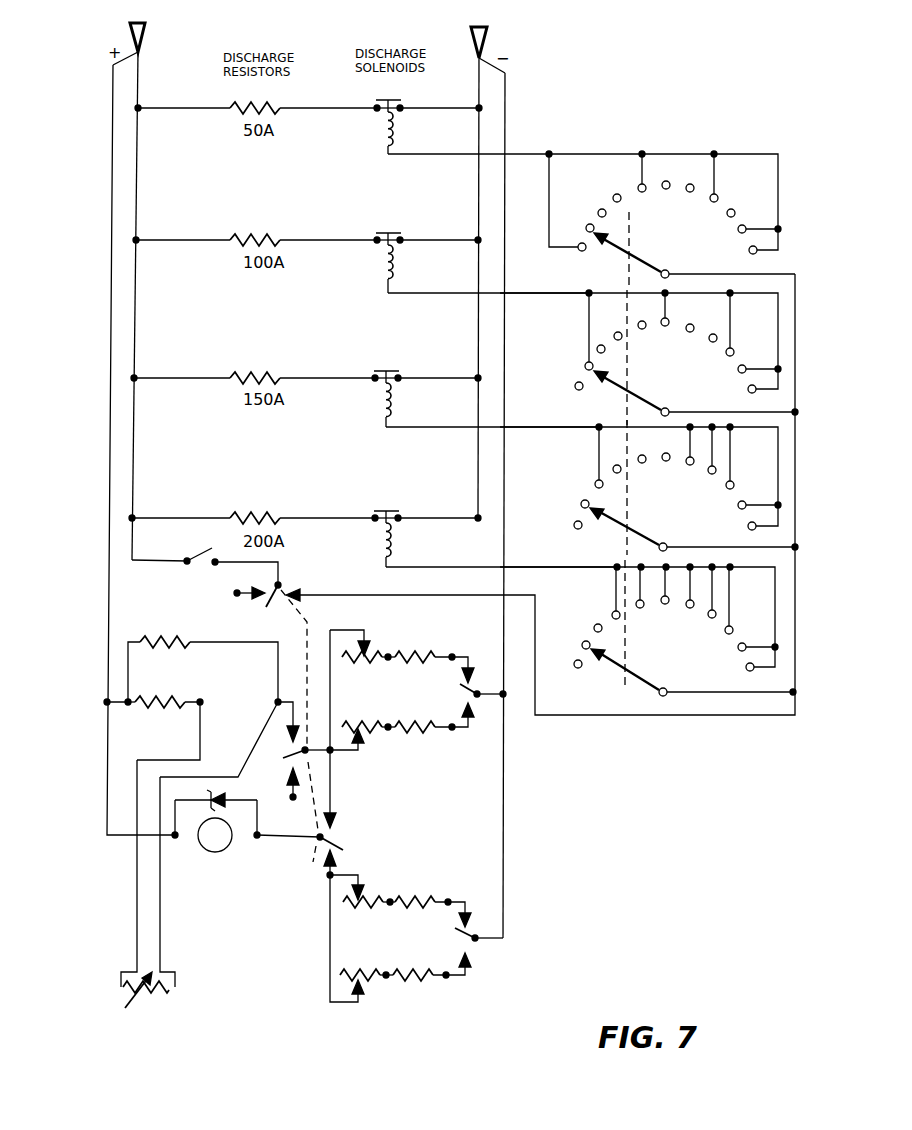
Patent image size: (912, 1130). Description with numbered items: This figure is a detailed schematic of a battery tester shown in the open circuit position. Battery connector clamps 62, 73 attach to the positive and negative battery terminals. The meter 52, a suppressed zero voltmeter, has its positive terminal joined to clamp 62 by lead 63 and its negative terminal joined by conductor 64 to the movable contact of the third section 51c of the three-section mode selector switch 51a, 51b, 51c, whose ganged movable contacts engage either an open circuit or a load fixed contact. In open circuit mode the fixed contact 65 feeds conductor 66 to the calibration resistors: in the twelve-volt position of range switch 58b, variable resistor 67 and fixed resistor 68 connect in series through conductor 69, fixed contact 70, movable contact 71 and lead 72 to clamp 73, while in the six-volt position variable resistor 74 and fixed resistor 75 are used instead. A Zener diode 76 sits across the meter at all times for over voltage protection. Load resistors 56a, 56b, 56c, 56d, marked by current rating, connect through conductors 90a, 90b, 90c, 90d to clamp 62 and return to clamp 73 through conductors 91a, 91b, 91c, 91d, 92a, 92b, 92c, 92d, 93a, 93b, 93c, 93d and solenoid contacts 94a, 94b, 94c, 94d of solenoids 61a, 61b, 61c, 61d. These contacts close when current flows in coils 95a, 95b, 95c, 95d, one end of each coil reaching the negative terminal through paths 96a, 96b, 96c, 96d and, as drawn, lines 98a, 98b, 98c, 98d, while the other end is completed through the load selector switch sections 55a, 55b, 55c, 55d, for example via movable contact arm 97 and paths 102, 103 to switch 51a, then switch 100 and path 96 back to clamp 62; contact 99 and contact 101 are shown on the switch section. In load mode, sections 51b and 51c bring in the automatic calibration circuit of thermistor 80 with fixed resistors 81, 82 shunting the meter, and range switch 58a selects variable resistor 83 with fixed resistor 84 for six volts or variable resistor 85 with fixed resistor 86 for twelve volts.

The battery connector clamp 62 is at (147, 33).
The battery connector clamp 73 is at (488, 40).
The lead 63 is at (108, 548).
The lead 72 is at (504, 866).
The conductor 90a is at (143, 106).
The conductor 90b is at (143, 238).
The conductor 90c is at (143, 376).
The conductor 90d is at (143, 516).
The conductor 91a is at (337, 106).
The conductor 91b is at (337, 238).
The conductor 91c is at (327, 376).
The conductor 91d is at (352, 517).
The conductor 92a is at (457, 110).
The conductor 92b is at (464, 240).
The conductor 92c is at (462, 378).
The conductor 92d is at (464, 522).
The conductor 93a is at (478, 75).
The conductor 93b is at (478, 182).
The conductor 93c is at (478, 268).
The conductor 93d is at (478, 402).
The solenoid contacts 94a is at (388, 99).
The solenoid contacts 94b is at (388, 232).
The solenoid contacts 94c is at (386, 370).
The solenoid contacts 94d is at (386, 510).
The solenoid coil 95a is at (388, 150).
The solenoid coil 95b is at (388, 290).
The solenoid coil 95c is at (386, 425).
The solenoid coil 95d is at (392, 548).
The path 96a is at (397, 116).
The path 96b is at (396, 248).
The path 96c is at (396, 388).
The path 96d is at (398, 528).
The load resistor 56a is at (234, 118).
The load resistor 56b is at (234, 250).
The load resistor 56c is at (236, 388).
The load resistor 56d is at (246, 512).
The solenoid 61a is at (374, 122).
The solenoid 61b is at (374, 262).
The solenoid 61c is at (358, 404).
The solenoid 61d is at (372, 547).
The solenoid to rotary switch conductor 98a is at (518, 152).
The solenoid to rotary switch conductor 98b is at (512, 292).
The solenoid to rotary switch conductor 98c is at (512, 426).
The solenoid to rotary switch conductor 98d is at (512, 566).
The load selector switch 55a is at (690, 156).
The load selector switch 55b is at (798, 370).
The load selector switch 55c is at (798, 519).
The load selector switch 55d is at (796, 639).
The switch contact conductor 99 is at (585, 314).
The movable contact arm 97 is at (630, 392).
The switch contact 101 is at (592, 370).
The path 102 is at (760, 413).
The path 103 is at (798, 415).
The path 96 is at (134, 567).
The switch 100 is at (196, 570).
The mode selector switch section 51a is at (302, 590).
The mode selector switch section 51b is at (332, 788).
The mode selector switch section 51c is at (332, 840).
The fixed resistor 82 is at (165, 635).
The fixed resistor 81 is at (140, 698).
The Zener diode 76 is at (220, 798).
The conductor 64 is at (300, 835).
The meter 52 is at (232, 850).
The fixed contact 65 is at (348, 853).
The conductor 66 is at (330, 940).
The variable resistor 67 is at (367, 896).
The fixed resistor 68 is at (408, 895).
The conductor 69 is at (448, 898).
The fixed contact 70 is at (462, 912).
The movable contact 71 is at (480, 942).
The variable resistor 74 is at (352, 968).
The fixed resistor 75 is at (406, 985).
The thermistor 80 is at (171, 968).
The variable resistor 83 is at (382, 722).
The fixed resistor 84 is at (421, 716).
The variable resistor 85 is at (372, 666).
The fixed resistor 86 is at (412, 666).
The range switch 58a is at (452, 700).
The range switch 58b is at (426, 933).